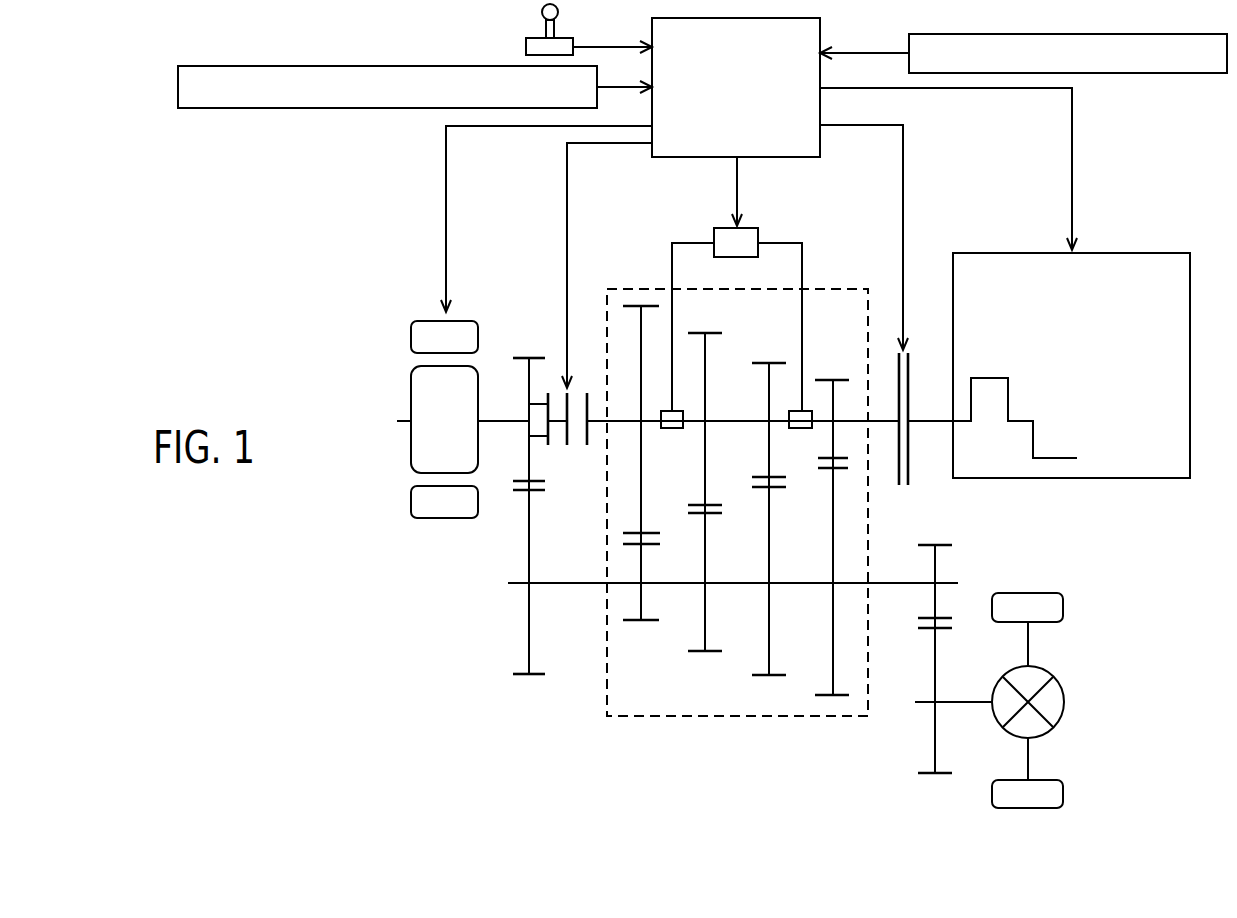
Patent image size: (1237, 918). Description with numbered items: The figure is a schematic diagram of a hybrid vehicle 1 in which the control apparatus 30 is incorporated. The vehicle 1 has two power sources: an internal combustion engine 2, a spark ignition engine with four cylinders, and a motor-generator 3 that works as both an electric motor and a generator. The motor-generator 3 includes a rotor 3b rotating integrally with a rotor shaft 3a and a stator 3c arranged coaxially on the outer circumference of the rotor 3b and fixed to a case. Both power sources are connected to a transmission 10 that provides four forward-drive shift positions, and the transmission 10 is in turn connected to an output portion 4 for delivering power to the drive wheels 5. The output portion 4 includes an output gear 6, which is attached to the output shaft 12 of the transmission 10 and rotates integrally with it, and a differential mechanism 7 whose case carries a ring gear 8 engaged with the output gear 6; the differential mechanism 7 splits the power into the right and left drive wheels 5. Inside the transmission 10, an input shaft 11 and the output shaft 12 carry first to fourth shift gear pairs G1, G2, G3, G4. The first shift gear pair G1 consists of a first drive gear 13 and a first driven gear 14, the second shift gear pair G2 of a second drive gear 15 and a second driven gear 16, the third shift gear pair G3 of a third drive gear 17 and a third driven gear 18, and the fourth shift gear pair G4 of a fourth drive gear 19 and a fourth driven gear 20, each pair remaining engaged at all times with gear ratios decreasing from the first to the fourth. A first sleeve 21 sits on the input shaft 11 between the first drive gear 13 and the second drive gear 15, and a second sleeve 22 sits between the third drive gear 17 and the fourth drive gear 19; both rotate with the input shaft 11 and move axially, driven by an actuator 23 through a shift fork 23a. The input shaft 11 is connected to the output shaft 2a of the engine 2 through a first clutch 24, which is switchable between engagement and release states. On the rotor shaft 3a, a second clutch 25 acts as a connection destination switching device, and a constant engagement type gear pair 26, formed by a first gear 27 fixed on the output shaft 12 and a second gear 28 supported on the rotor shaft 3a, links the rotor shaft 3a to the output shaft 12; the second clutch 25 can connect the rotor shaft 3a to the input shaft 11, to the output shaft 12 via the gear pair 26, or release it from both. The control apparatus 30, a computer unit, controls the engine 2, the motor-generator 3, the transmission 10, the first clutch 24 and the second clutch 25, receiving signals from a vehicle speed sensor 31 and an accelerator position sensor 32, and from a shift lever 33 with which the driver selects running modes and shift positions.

The vehicle 1 is at (295, 203).
The internal combustion engine 2 is at (1160, 253).
The output shaft of the engine 2a is at (930, 418).
The motor-generator 3 is at (410, 371).
The rotor shaft 3a is at (497, 421).
The rotor 3b is at (411, 392).
The stator 3c is at (411, 339).
The output portion 4 is at (1090, 673).
The drive wheels 5 is at (1050, 593).
The output gear 6 is at (940, 545).
The differential mechanism 7 is at (1064, 700).
The ring gear 8 is at (936, 745).
The transmission 10 is at (607, 704).
The input shaft 11 is at (733, 418).
The output shaft 12 is at (735, 580).
The first drive gear 13 is at (823, 379).
The first driven gear 14 is at (833, 637).
The second drive gear 15 is at (761, 362).
The second driven gear 16 is at (769, 543).
The third drive gear 17 is at (705, 450).
The third driven gear 18 is at (705, 612).
The fourth drive gear 19 is at (644, 500).
The fourth driven gear 20 is at (641, 598).
The first sleeve 21 is at (803, 430).
The second sleeve 22 is at (675, 430).
The actuator 23 is at (755, 228).
The shift fork 23a is at (683, 243).
The first clutch 24 is at (903, 490).
The second clutch 25 is at (570, 460).
The constant engagement type gear pair 26 is at (498, 541).
The first gear 27 is at (529, 632).
The second gear 28 is at (532, 358).
The control apparatus 30 is at (822, 32).
The vehicle speed sensor 31 is at (1155, 73).
The accelerator position sensor 32 is at (333, 108).
The shift lever 33 is at (526, 47).
The first shift gear pair G1 is at (816, 547).
The second shift gear pair G2 is at (788, 543).
The third shift gear pair G3 is at (725, 548).
The fourth shift gear pair G4 is at (659, 508).